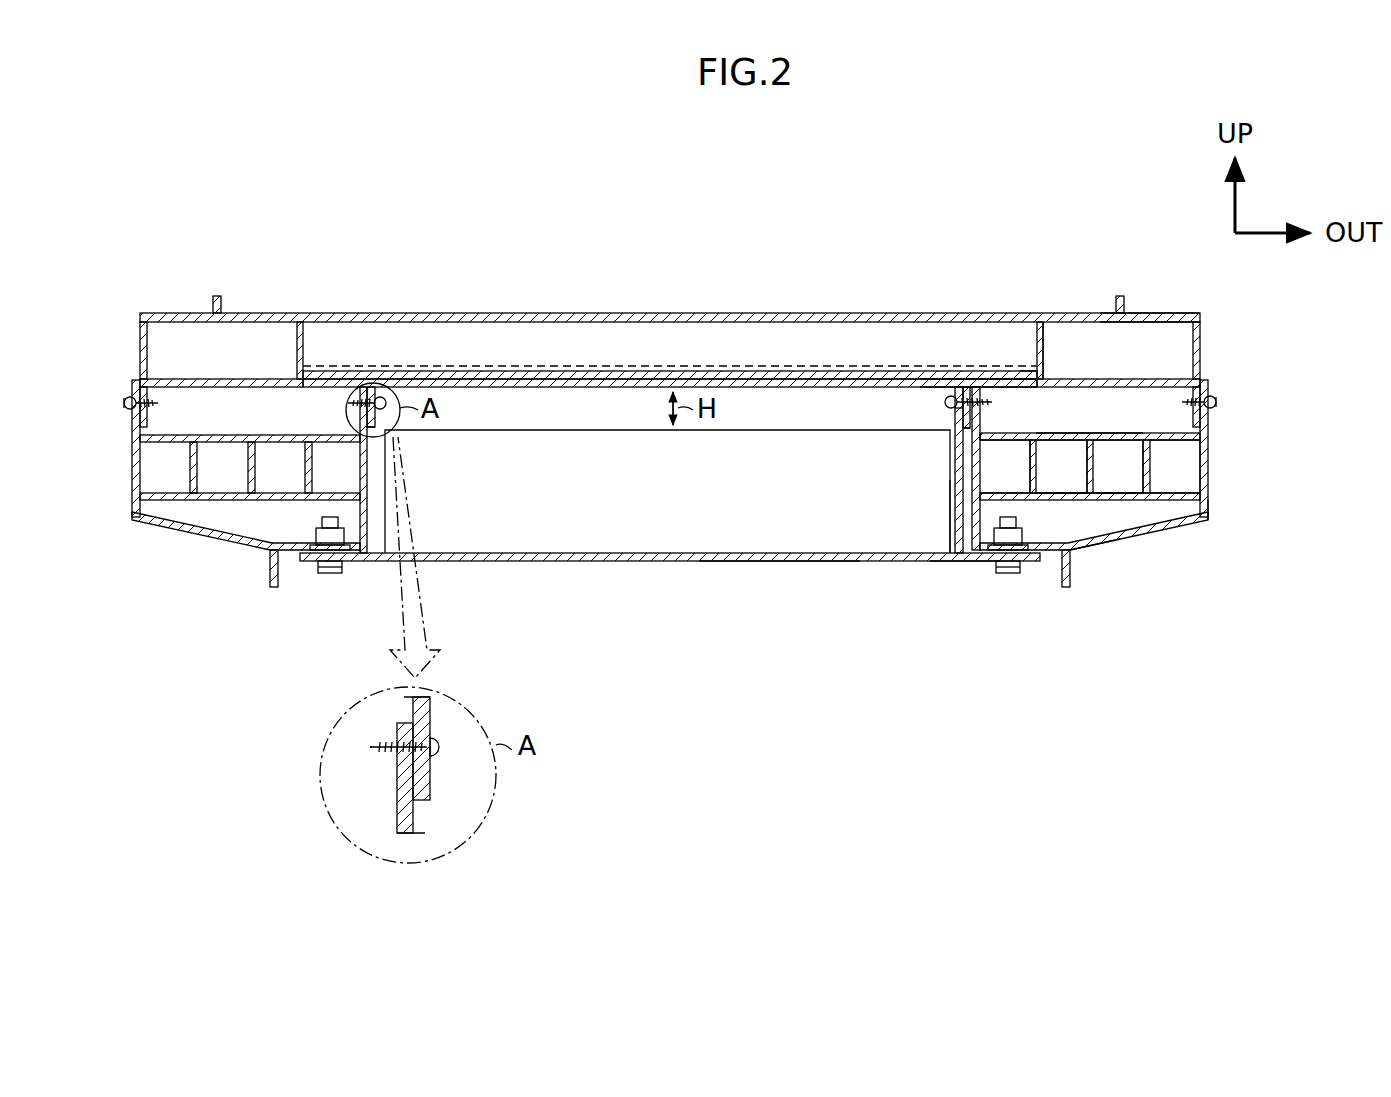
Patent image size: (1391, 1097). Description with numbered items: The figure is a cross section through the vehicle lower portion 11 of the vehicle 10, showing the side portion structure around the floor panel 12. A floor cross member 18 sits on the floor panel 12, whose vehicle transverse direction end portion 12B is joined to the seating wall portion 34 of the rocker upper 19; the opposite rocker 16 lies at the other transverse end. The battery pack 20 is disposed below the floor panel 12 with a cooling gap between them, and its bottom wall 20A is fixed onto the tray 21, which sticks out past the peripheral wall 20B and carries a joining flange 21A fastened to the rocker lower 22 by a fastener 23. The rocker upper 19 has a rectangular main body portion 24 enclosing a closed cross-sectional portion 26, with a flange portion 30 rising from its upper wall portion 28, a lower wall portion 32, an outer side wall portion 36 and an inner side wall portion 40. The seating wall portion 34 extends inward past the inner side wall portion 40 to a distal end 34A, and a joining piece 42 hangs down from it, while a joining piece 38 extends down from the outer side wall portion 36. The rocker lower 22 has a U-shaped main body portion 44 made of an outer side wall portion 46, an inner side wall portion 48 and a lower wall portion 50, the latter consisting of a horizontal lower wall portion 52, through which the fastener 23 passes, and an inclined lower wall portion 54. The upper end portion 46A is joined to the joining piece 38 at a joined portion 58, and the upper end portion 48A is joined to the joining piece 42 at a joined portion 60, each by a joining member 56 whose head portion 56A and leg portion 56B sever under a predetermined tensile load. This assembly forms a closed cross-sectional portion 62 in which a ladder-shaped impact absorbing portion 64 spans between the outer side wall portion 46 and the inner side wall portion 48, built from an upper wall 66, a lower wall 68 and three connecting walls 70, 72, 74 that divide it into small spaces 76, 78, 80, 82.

The vehicle 10 is at (696, 477).
The vehicle lower portion 11 is at (913, 246).
The floor panel 12 is at (540, 370).
The vehicle transverse direction end portion 12B is at (958, 372).
The rocker 16 is at (182, 292).
The floor cross member 18 is at (675, 313).
The rocker upper 19 is at (270, 312).
The battery pack 20 is at (712, 527).
The bottom wall 20A is at (540, 577).
The peripheral wall 20B is at (960, 500).
The tray 21 is at (780, 562).
The joining flange 21A is at (957, 562).
The rocker lower 22 is at (183, 533).
The fastener 23 is at (1010, 575).
The main body portion 24 is at (1178, 313).
The closed cross-sectional portion 26 is at (1089, 340).
The upper wall portion 28 is at (1060, 313).
The flange portion 30 is at (1121, 296).
The lower wall portion 32 is at (1208, 374).
The seating wall portion 34 is at (352, 378).
The distal end 34A is at (940, 388).
The outer side wall portion 36 is at (140, 345).
The joining piece 38 is at (150, 405).
The inner side wall portion 40 is at (1047, 350).
The joining piece 42 is at (392, 430).
The main body portion 44 is at (1208, 483).
The outer side wall portion 46 is at (135, 478).
The upper end portion 46A is at (136, 425).
The inner side wall portion 48 is at (363, 530).
The upper end portion 48A is at (368, 407).
The lower wall portion 50 is at (738, 598).
The horizontal lower wall portion 52 is at (1030, 578).
The inclined lower wall portion 54 is at (1100, 560).
The joining member 56 is at (372, 395).
The head portion 56A is at (445, 758).
The leg portion 56B is at (385, 752).
The joined portion 58 is at (122, 404).
The joined portion 60 is at (948, 412).
The closed cross-sectional portion 62 is at (1069, 418).
The impact absorbing portion 64 is at (250, 500).
The upper wall 66 is at (1110, 434).
The lower wall 68 is at (1118, 540).
The connecting wall 70 is at (1206, 513).
The connecting wall 72 is at (1100, 495).
The connecting wall 74 is at (1046, 495).
The small space 76 is at (1160, 482).
The small space 78 is at (1102, 482).
The small space 80 is at (1046, 482).
The small space 82 is at (989, 482).